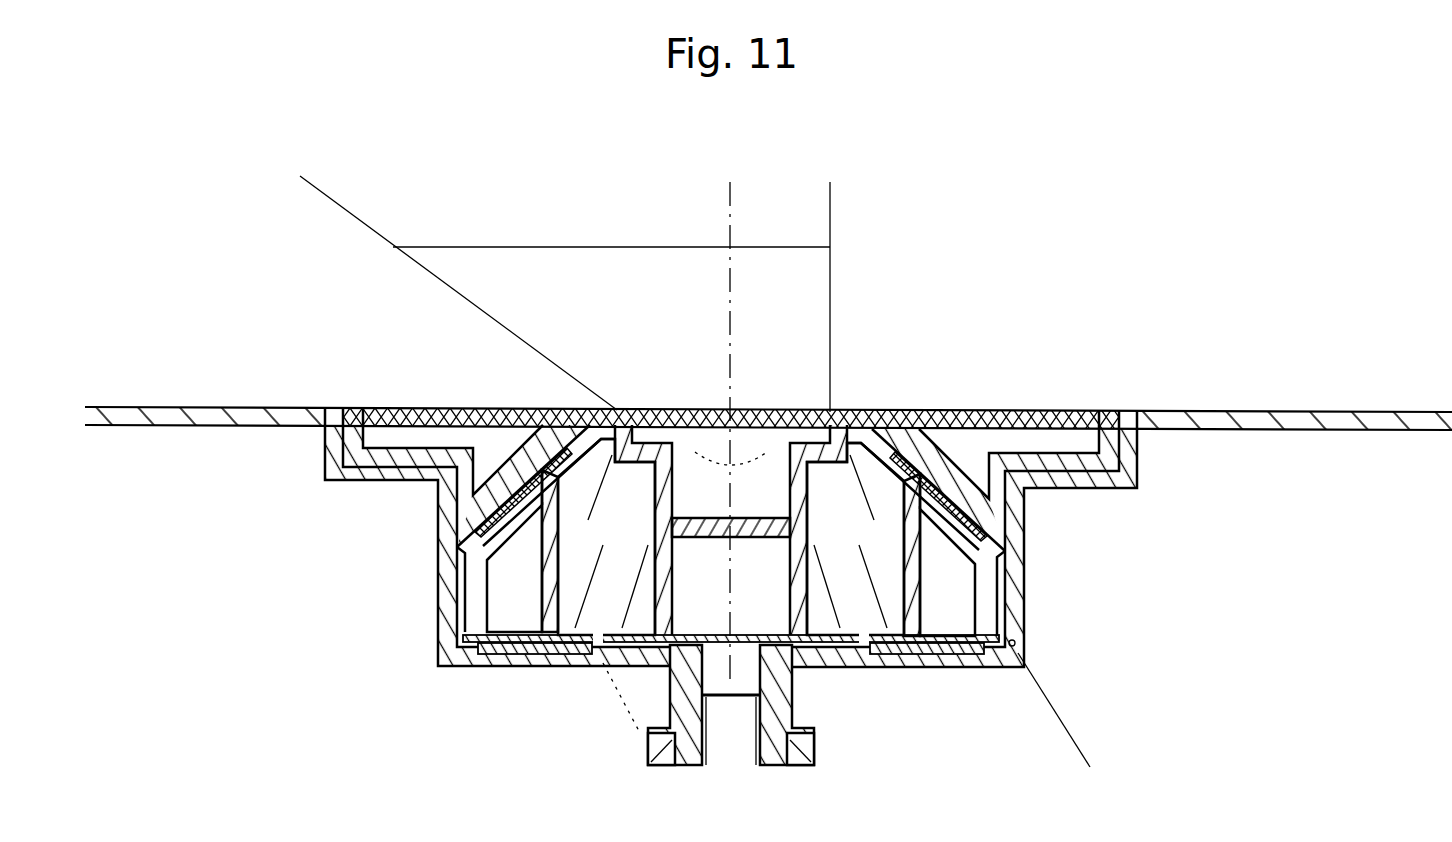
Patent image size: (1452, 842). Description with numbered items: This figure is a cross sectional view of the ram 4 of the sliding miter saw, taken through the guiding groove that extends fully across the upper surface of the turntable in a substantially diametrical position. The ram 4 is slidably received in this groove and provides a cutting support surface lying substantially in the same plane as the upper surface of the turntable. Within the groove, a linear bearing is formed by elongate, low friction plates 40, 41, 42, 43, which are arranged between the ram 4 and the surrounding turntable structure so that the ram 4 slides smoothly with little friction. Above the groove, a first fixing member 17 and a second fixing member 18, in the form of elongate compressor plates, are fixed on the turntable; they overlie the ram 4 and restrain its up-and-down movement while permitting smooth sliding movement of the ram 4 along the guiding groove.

The first fixing member 17 is at (768, 360).
The second fixing member 18 is at (990, 469).
The ram 4 is at (1048, 539).
The low friction plate 40 is at (408, 708).
The low friction plate 41 is at (983, 429).
The low friction plate 42 is at (1079, 713).
The low friction plate 43 is at (476, 437).